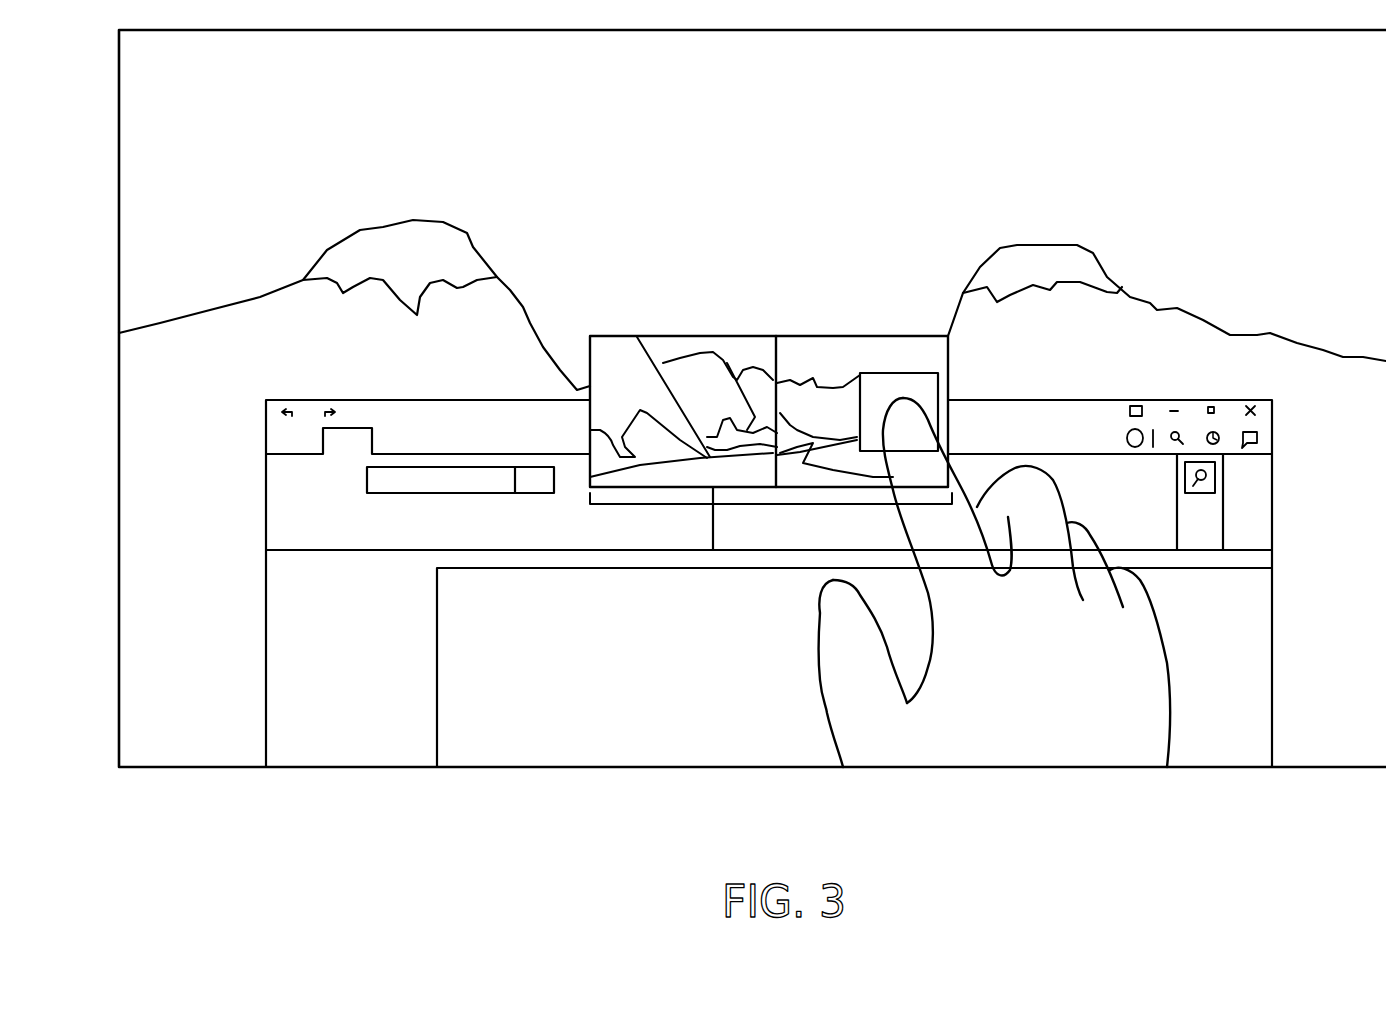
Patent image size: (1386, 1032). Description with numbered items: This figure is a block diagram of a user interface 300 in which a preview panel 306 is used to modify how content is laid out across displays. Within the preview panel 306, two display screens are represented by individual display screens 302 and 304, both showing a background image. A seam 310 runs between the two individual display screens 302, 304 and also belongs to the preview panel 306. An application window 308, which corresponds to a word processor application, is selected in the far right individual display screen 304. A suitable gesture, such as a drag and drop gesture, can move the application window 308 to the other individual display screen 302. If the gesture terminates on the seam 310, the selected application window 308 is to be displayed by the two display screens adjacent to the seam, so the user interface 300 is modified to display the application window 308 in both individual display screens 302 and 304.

The user interface 300 is at (807, 859).
The individual display screen 302 is at (637, 363).
The individual display screen 304 is at (790, 392).
The preview panel 306 is at (767, 507).
The application window 308 is at (973, 398).
The seam 310 is at (777, 395).